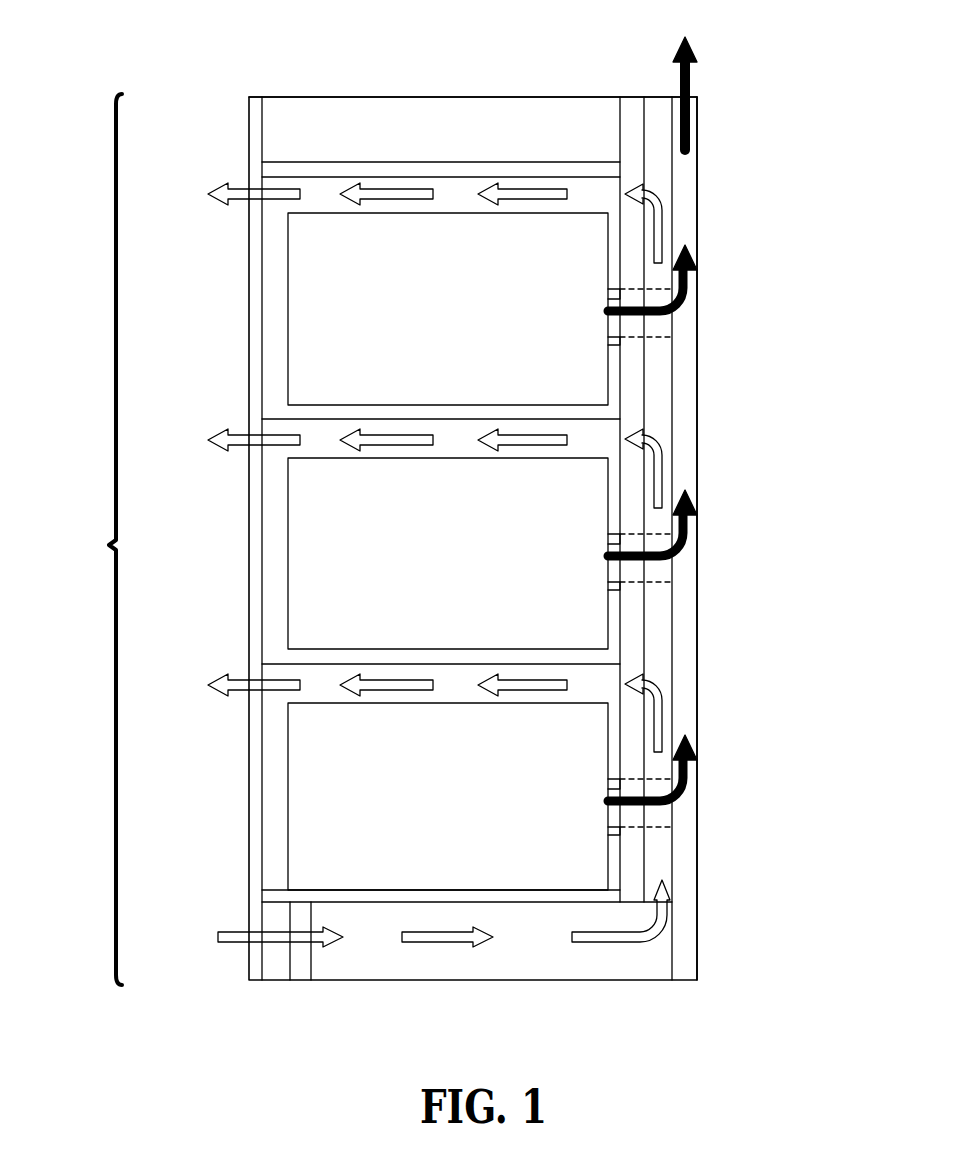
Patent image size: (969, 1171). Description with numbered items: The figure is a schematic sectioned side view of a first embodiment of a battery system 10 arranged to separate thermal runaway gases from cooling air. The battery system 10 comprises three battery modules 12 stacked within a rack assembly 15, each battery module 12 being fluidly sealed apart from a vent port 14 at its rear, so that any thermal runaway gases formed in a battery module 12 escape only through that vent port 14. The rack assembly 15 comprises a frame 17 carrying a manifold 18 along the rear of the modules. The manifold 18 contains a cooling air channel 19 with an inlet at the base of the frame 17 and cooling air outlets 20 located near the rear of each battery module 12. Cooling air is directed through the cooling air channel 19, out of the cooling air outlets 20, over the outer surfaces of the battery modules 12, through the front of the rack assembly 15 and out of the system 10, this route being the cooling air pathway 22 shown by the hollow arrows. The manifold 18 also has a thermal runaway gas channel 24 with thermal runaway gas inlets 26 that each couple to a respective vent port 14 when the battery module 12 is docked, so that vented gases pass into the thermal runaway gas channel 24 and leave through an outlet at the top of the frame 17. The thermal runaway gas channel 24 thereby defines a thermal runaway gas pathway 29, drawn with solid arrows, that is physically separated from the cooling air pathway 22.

The battery system 10 is at (383, 539).
The battery module 12 is at (462, 323).
The vent port 14 is at (612, 298).
The rack assembly 15 is at (368, 96).
The frame 17 is at (442, 124).
The manifold 18 is at (698, 606).
The cooling air channel 19 is at (661, 630).
The cooling air outlets 20 is at (622, 172).
The cooling air pathway 22 is at (232, 188).
The thermal runaway gas channel 24 is at (690, 463).
The thermal runaway gas inlets 26 is at (656, 345).
The thermal runaway gas pathway 29 is at (692, 75).